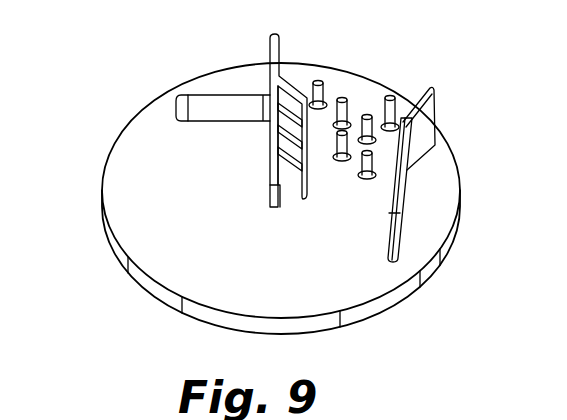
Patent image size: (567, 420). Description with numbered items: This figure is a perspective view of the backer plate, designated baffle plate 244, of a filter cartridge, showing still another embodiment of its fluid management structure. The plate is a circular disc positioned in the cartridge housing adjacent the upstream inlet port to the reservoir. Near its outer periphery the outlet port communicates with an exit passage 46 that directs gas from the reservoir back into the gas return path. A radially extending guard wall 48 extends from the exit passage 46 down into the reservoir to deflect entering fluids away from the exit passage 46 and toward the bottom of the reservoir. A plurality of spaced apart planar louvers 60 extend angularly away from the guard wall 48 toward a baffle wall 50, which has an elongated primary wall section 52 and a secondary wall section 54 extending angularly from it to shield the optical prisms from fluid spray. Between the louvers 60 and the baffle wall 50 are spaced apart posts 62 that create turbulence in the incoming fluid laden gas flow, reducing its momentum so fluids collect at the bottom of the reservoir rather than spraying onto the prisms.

The baffle plate 244 is at (102, 163).
The exit passage 46 is at (179, 109).
The guard wall 48 is at (258, 145).
The baffle wall 50 is at (275, 198).
The primary wall section 52 is at (405, 179).
The secondary wall section 54 is at (420, 128).
The planar louvers 60 is at (290, 105).
The posts 62 is at (319, 82).